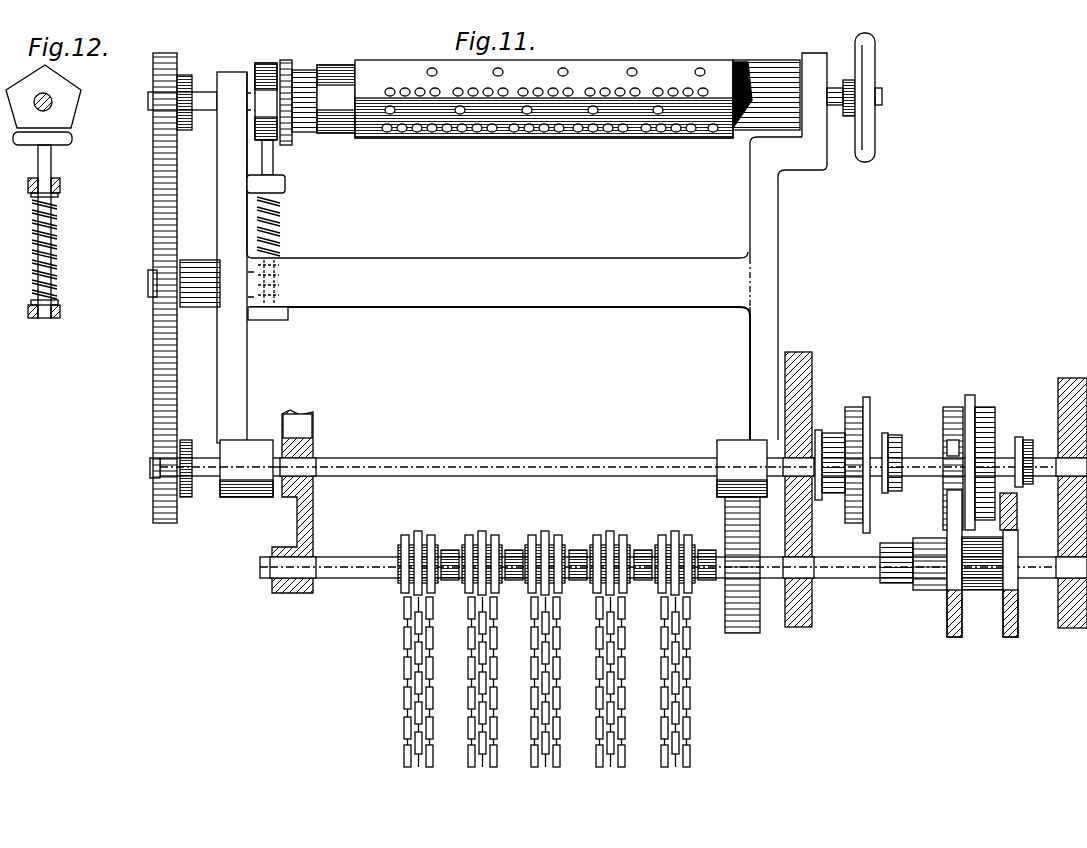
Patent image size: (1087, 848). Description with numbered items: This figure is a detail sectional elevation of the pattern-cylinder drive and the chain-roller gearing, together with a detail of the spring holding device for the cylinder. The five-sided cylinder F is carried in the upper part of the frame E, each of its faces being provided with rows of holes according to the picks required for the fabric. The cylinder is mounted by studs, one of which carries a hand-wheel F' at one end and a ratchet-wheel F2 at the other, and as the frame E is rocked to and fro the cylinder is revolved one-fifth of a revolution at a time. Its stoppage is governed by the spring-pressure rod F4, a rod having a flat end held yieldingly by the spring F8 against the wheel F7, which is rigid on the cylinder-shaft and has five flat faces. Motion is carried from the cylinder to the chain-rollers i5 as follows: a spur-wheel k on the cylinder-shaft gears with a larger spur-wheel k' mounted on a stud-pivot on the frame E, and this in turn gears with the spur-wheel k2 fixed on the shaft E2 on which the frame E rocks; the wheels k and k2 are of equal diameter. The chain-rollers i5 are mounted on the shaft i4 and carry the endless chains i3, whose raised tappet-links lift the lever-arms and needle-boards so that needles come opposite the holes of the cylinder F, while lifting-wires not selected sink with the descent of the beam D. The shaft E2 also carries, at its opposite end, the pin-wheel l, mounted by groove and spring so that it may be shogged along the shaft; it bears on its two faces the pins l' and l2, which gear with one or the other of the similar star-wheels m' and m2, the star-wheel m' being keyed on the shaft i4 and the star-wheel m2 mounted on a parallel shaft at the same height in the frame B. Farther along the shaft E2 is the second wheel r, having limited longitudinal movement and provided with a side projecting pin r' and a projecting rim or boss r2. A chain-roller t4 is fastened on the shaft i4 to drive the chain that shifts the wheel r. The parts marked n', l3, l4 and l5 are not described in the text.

In FIG. 12, the wheel F7 is at (53, 102).
In FIG. 12, the spring-pressure rod F4 is at (50, 167).
In FIG. 11, the spring-pressure rod F4 is at (267, 153).
In FIG. 12, the spring F8 is at (54, 249).
In FIG. 11, the spur-wheel k is at (147, 288).
In FIG. 11, the larger spur-wheel k' is at (166, 302).
In FIG. 11, the spur-wheel k2 is at (153, 505).
In FIG. 11, the ratchet-wheel F2 is at (292, 143).
In FIG. 11, the cylinder F is at (546, 117).
In FIG. 11, the hand-wheel F' is at (866, 97).
In FIG. 11, the frame E is at (375, 270).
In FIG. 11, the shaft E2 is at (923, 477).
In FIG. 11, the frame B is at (315, 507).
In FIG. 11, the shaft i4 is at (338, 580).
In FIG. 11, the chain-rollers i5 is at (497, 593).
In FIG. 11, the endless chain i3 is at (404, 680).
In FIG. 11, the gear wheel n' is at (742, 579).
In FIG. 11, the second wheel r is at (869, 463).
In FIG. 11, the side projecting pin r' is at (834, 446).
In FIG. 11, the projecting rim or boss r2 is at (851, 405).
In FIG. 11, the pin-wheel l is at (973, 451).
In FIG. 11, the pin l' is at (936, 436).
In FIG. 11, the pin l2 is at (1017, 514).
In FIG. 11, the gear wheel l3 is at (953, 407).
In FIG. 11, the sleeve l4 is at (996, 407).
In FIG. 11, the collar l5 is at (1030, 437).
In FIG. 11, the chain-roller t4 is at (926, 595).
In FIG. 11, the star-wheel m' is at (953, 577).
In FIG. 11, the star-wheel m2 is at (1010, 637).
In FIG. 11, the beam D is at (1071, 503).